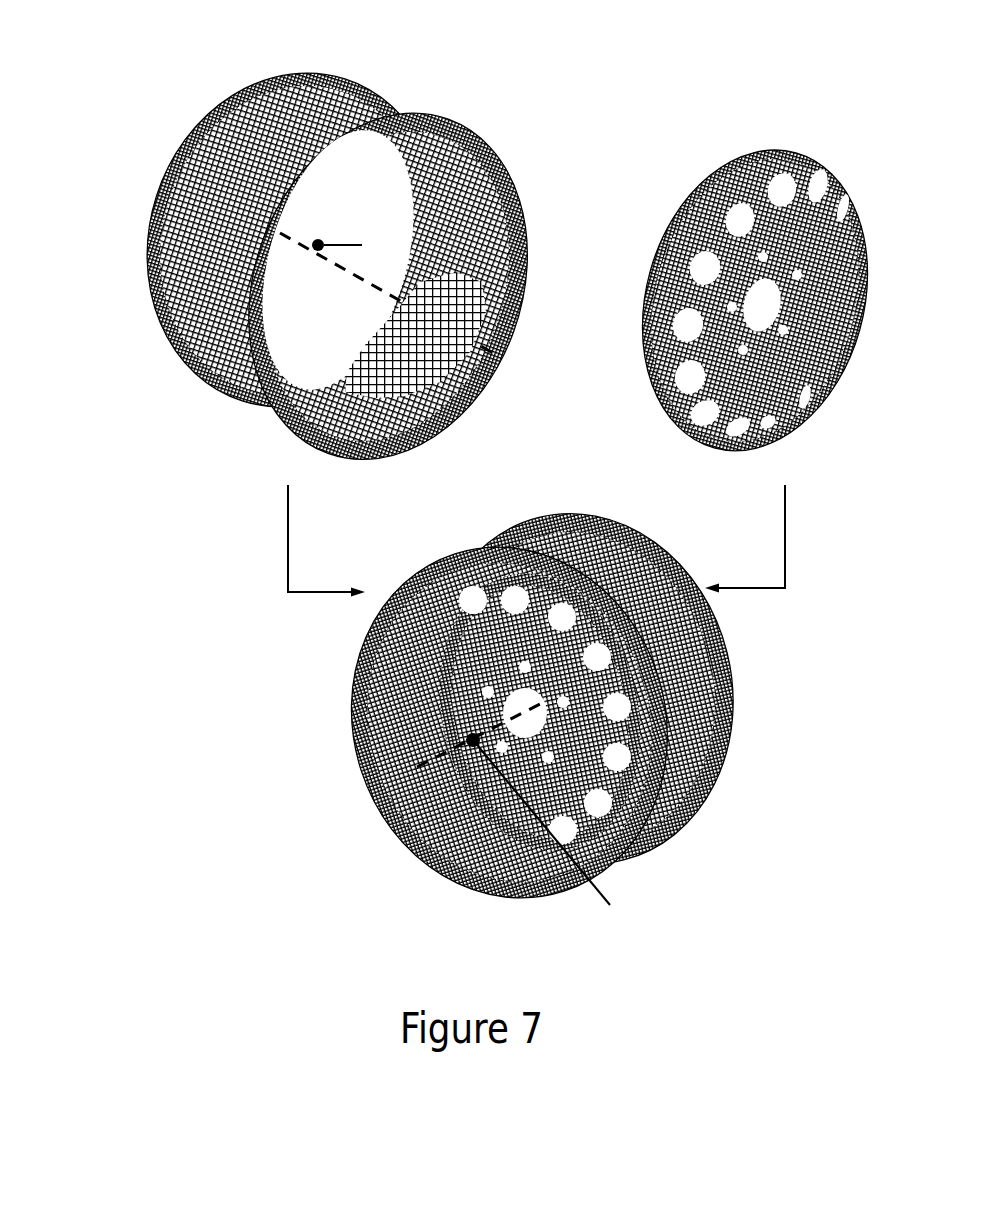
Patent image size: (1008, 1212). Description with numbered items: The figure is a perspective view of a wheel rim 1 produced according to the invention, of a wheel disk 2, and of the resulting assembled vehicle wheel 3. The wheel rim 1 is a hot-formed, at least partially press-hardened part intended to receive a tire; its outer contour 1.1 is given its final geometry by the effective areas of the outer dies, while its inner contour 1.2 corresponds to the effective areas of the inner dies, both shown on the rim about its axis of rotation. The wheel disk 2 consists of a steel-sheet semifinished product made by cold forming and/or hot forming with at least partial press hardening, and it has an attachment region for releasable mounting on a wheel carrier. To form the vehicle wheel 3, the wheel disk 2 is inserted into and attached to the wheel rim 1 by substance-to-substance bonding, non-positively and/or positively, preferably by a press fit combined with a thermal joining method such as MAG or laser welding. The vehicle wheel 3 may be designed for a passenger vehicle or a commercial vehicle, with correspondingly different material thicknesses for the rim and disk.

The wheel rim 1 is at (150, 162).
The outer contour 1.1 is at (293, 132).
The inner contour 1.2 is at (395, 362).
The wheel disk 2 is at (665, 178).
The vehicle wheel 3 is at (326, 703).